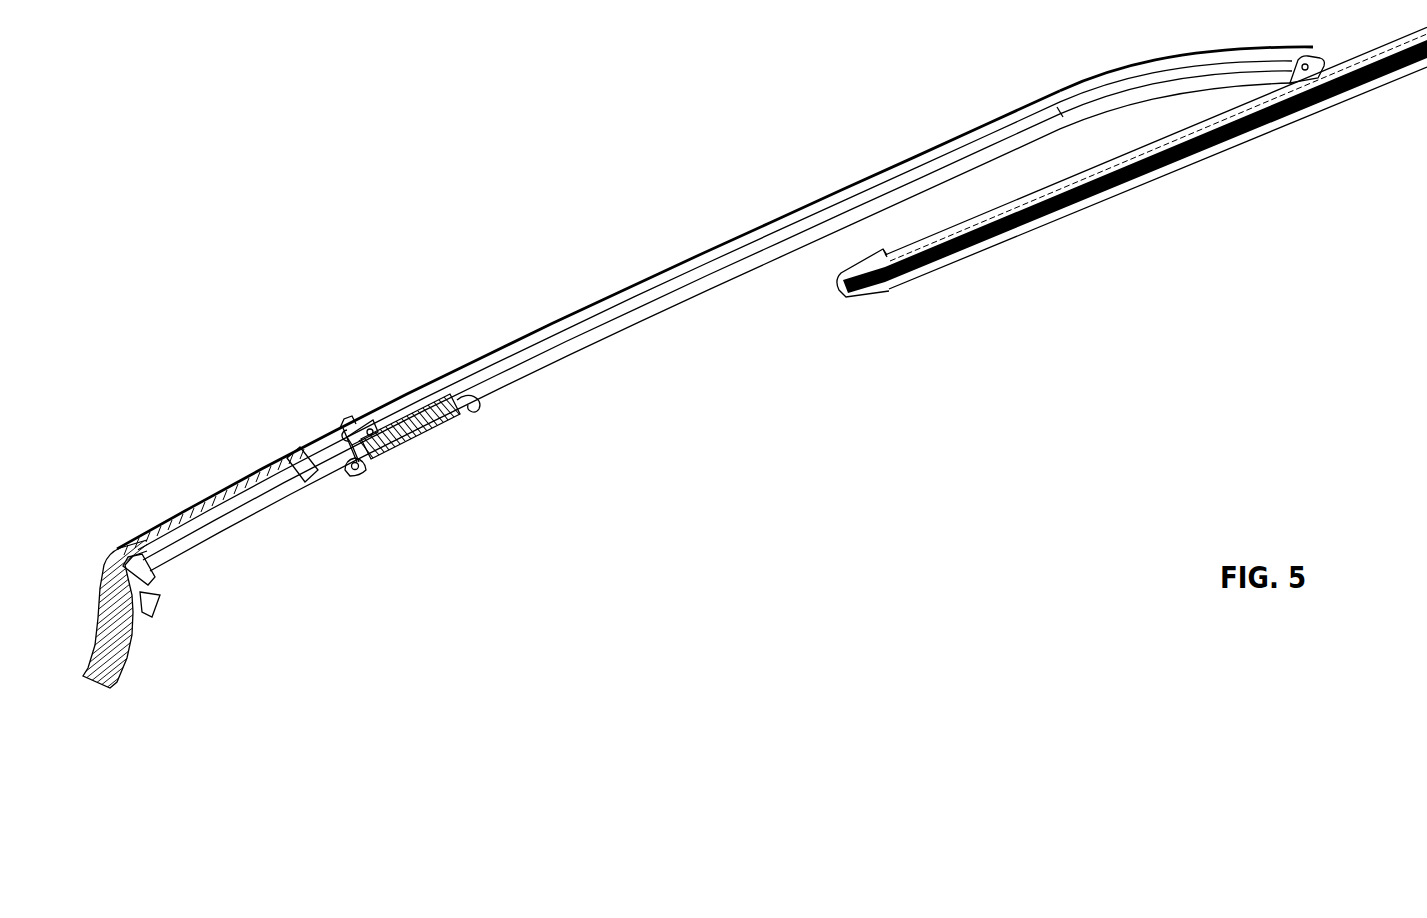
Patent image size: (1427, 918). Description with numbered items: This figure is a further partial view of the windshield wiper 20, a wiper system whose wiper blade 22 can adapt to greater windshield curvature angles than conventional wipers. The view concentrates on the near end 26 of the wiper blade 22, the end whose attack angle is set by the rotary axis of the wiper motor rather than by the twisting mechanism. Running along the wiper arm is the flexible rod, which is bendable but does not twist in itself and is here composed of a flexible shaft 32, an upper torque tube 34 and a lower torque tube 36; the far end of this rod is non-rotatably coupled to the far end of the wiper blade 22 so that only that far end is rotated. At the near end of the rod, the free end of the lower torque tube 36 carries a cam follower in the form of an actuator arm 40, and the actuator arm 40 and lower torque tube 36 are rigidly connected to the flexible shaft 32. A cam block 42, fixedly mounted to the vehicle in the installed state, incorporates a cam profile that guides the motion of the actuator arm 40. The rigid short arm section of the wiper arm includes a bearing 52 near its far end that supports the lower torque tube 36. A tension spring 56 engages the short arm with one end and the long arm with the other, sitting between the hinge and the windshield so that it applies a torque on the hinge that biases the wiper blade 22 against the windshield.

The windshield wiper 20 is at (872, 416).
The wiper blade 22 is at (990, 238).
The near end 26 is at (843, 292).
The flexible shaft 32 is at (1178, 72).
The upper torque tube 34 is at (607, 322).
The lower torque tube 36 is at (287, 478).
The actuator arm 40 is at (149, 578).
The cam block 42 is at (158, 608).
The bearing 52 is at (330, 470).
The tension spring 56 is at (460, 423).